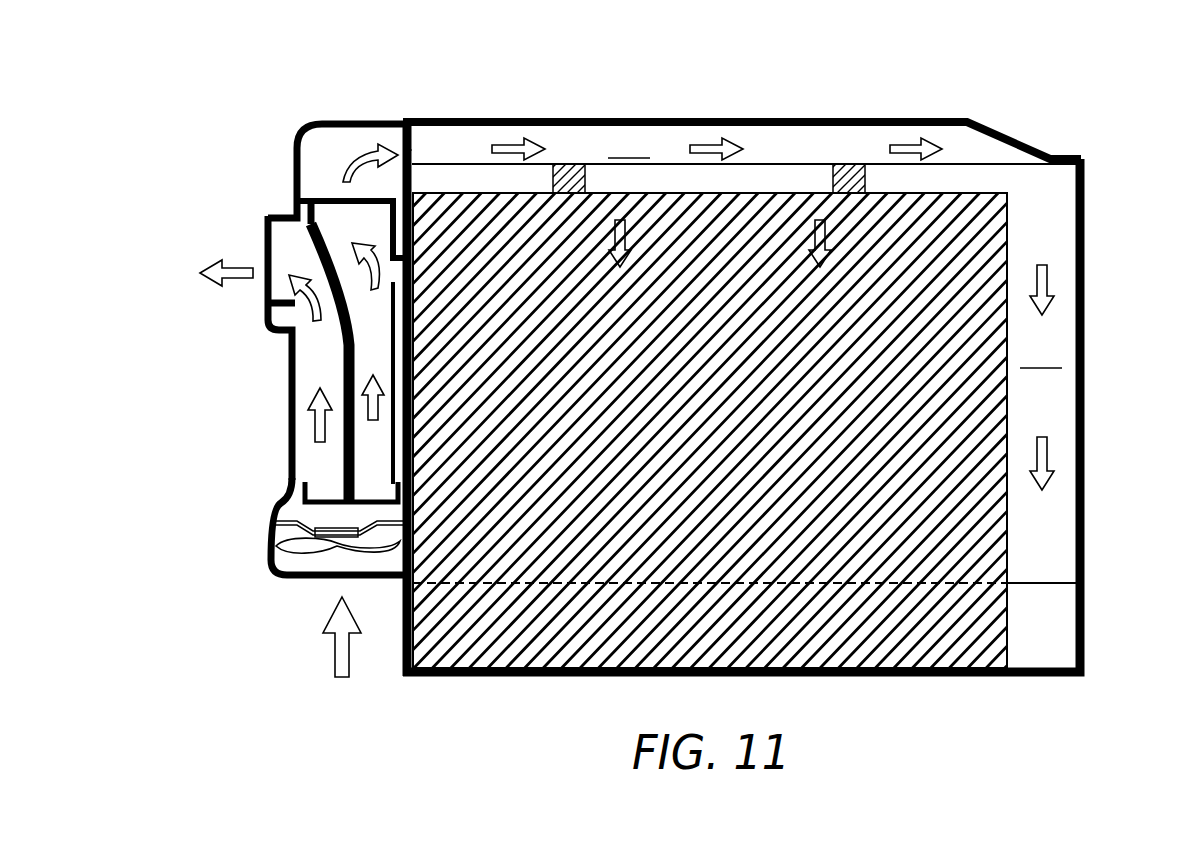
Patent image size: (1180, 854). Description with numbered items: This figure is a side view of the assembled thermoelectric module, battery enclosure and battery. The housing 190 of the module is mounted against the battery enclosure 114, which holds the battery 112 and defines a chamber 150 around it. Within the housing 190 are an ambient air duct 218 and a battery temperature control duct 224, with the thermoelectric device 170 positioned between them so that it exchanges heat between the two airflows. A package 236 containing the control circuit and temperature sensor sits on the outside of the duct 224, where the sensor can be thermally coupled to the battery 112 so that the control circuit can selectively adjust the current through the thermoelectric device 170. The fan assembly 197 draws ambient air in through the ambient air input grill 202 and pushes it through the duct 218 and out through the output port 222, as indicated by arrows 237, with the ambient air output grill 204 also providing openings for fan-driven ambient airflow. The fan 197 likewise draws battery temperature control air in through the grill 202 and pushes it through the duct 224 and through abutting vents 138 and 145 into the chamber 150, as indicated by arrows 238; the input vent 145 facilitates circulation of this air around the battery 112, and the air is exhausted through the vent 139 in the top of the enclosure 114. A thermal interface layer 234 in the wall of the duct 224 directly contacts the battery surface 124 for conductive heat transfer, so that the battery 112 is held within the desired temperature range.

The battery 112 is at (810, 648).
The battery enclosure 114 is at (1102, 326).
The battery surface 124 is at (463, 186).
The vent 138 is at (396, 140).
The vent 139 is at (882, 118).
The input vent 145 is at (412, 150).
The chamber 150 is at (777, 313).
The thermoelectric device 170 is at (372, 450).
The housing 190 is at (268, 533).
The fan assembly 197 is at (305, 549).
The ambient air input grill 202 is at (377, 580).
The ambient air output grill 204 is at (262, 225).
The ambient air duct 218 is at (344, 381).
The output port 222 is at (283, 215).
The battery temperature control duct 224 is at (337, 199).
The thermal interface layer 234 is at (303, 128).
The package 236 is at (425, 203).
The arrows 237 is at (302, 303).
The arrows 238 is at (353, 258).